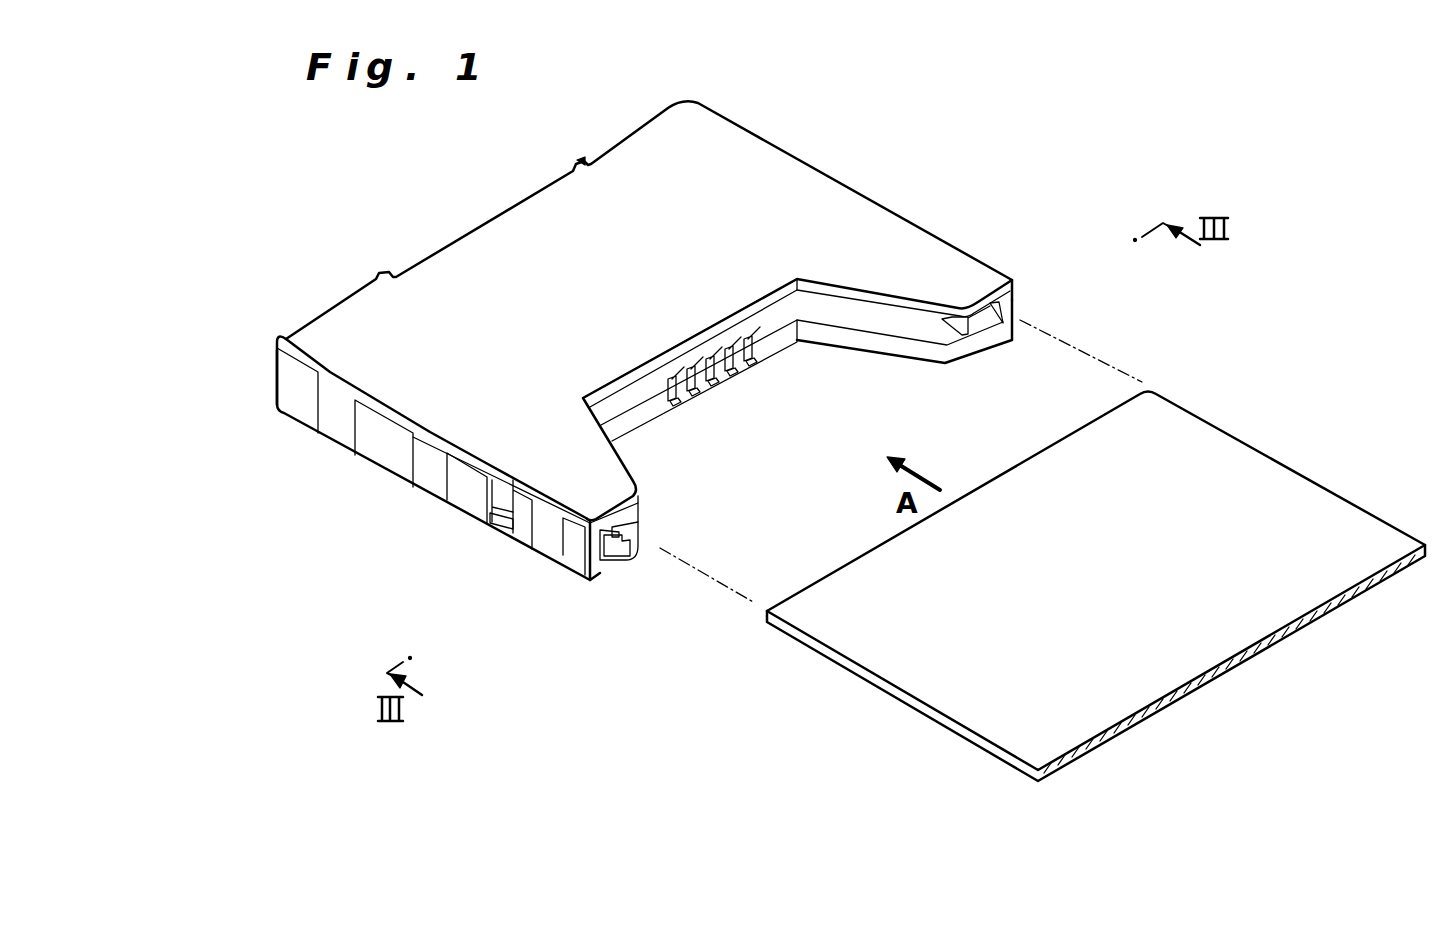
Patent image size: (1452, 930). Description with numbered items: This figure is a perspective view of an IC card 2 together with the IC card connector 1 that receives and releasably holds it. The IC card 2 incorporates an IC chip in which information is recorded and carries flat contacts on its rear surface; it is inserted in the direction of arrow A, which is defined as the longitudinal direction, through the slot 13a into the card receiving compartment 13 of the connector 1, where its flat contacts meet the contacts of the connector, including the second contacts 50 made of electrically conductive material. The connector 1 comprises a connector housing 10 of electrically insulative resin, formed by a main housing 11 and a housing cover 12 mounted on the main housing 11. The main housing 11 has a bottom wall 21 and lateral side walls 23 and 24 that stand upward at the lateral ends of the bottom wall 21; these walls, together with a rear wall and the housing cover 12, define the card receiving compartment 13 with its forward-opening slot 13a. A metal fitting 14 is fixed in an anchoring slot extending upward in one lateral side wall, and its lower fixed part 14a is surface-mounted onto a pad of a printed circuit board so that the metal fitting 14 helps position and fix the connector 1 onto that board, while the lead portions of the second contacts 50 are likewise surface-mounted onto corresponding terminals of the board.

The IC card connector 1 is at (918, 133).
The IC card 2 is at (1255, 466).
The connector housing 10 is at (204, 302).
The main housing 11 is at (281, 383).
The housing cover 12 is at (293, 329).
The card receiving compartment 13 is at (848, 312).
The slot 13a is at (757, 318).
The metal fitting 14 is at (507, 491).
The fixed part 14a is at (500, 533).
The bottom wall 21 is at (913, 362).
The lateral side wall 23 is at (601, 568).
The lateral side wall 24 is at (1013, 305).
The second contacts 50 is at (773, 380).